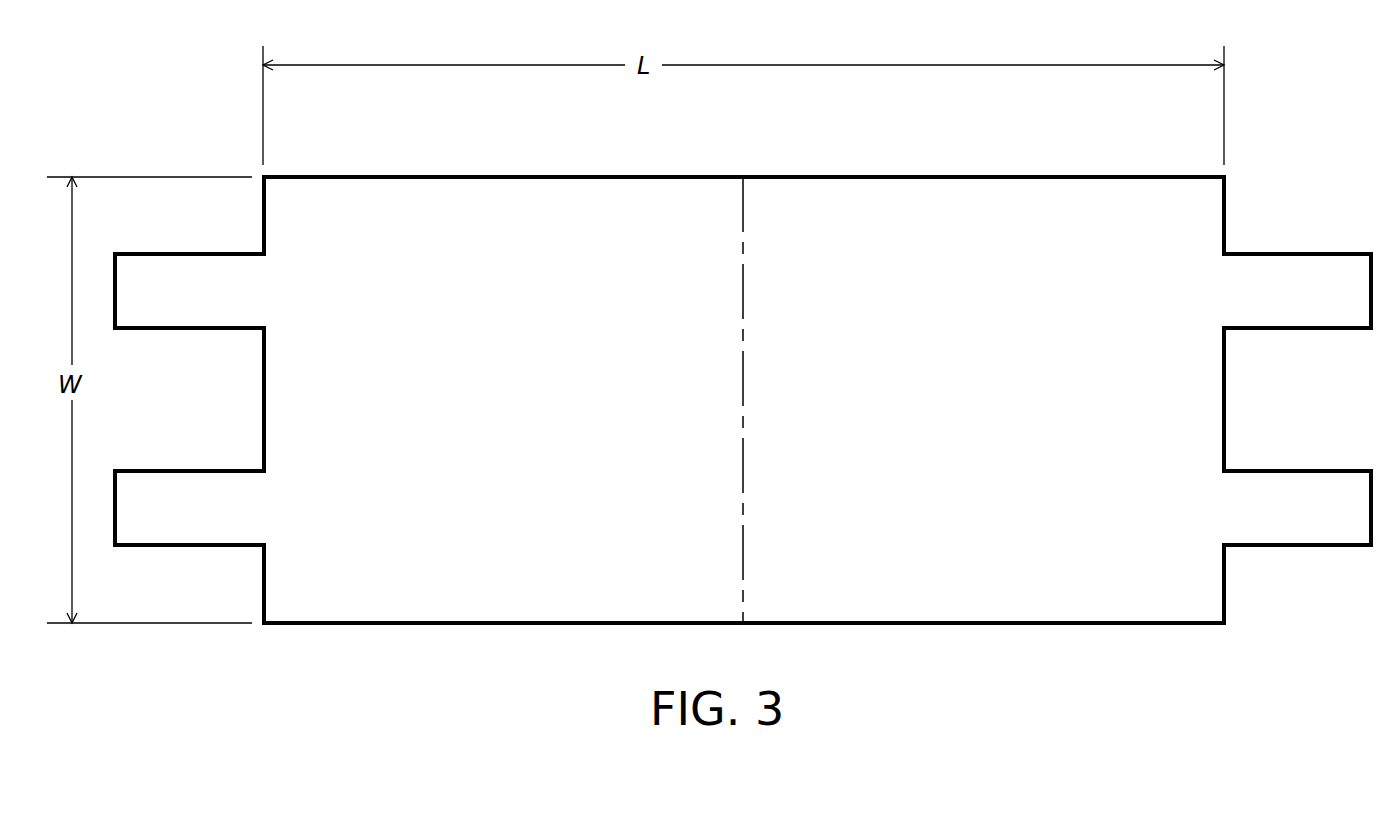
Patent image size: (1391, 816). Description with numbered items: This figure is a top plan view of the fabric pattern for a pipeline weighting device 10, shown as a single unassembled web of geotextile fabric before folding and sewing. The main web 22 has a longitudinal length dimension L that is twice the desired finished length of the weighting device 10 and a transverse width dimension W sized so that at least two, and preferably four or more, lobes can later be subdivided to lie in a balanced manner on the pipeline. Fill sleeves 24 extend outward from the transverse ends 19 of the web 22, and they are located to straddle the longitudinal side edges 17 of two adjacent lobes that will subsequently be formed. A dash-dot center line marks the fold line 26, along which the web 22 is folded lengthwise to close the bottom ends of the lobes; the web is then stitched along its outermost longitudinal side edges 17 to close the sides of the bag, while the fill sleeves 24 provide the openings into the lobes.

The pipeline weighting device 10 is at (744, 391).
The longitudinal side edges 17 is at (984, 178).
The transverse ends 19 is at (263, 400).
The main web 22 is at (1145, 608).
The fill sleeves 24 is at (165, 275).
The fold line 26 is at (743, 400).